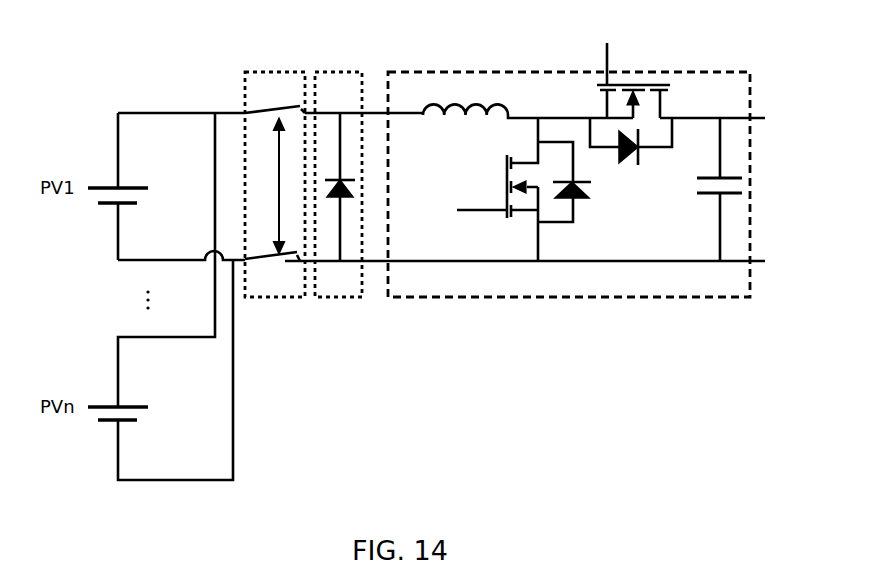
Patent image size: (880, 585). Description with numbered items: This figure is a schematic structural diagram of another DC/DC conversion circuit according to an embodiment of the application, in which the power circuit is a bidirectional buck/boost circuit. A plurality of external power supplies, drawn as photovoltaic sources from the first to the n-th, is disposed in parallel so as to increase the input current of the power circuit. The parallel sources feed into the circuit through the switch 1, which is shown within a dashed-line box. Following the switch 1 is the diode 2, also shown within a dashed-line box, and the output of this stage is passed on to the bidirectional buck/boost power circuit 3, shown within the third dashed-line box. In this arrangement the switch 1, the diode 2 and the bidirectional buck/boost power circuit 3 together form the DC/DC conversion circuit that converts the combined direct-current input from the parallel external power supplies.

The switch 1 is at (263, 297).
The diode 2 is at (330, 297).
The bidirectional buck/boost power circuit 3 is at (533, 297).